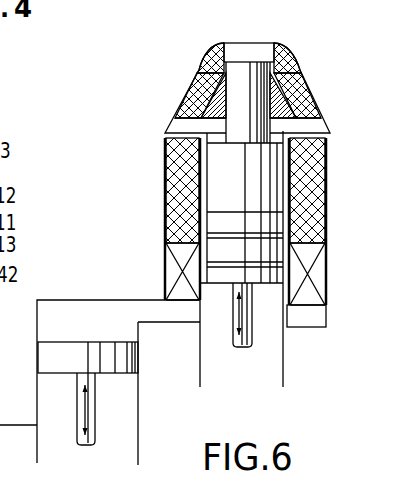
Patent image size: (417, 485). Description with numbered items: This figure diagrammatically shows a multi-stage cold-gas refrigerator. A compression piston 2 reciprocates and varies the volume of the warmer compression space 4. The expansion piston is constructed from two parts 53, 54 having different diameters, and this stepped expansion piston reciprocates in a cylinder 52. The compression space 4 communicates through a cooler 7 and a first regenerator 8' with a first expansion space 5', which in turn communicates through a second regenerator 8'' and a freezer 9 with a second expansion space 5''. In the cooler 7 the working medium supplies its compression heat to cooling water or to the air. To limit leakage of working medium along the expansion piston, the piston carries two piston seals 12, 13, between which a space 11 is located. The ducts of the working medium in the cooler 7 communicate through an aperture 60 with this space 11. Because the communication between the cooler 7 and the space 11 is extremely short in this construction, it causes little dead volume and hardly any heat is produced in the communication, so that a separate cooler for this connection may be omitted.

The second expansion space 5'' is at (249, 72).
The expansion piston part 54 is at (253, 77).
The freezer 9 is at (209, 69).
The second regenerator 8'' is at (232, 93).
The first expansion space 5' is at (229, 88).
The expansion piston part 53 is at (238, 181).
The aperture 60 is at (289, 256).
The first regenerator 8' is at (163, 219).
The cooler 7 is at (174, 268).
The piston seal 12 is at (326, 221).
The space 11 is at (312, 272).
The piston seal 13 is at (316, 297).
The cylinder 52 is at (283, 343).
The compression space 4 is at (96, 328).
The compression piston 2 is at (51, 355).